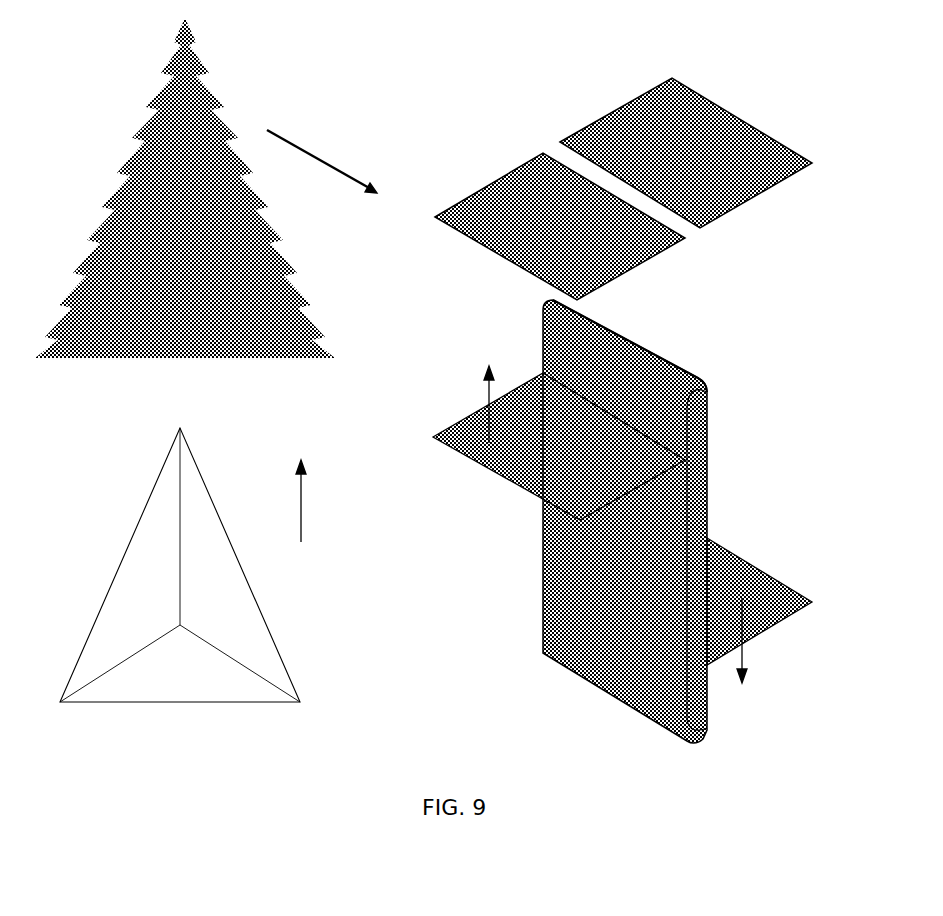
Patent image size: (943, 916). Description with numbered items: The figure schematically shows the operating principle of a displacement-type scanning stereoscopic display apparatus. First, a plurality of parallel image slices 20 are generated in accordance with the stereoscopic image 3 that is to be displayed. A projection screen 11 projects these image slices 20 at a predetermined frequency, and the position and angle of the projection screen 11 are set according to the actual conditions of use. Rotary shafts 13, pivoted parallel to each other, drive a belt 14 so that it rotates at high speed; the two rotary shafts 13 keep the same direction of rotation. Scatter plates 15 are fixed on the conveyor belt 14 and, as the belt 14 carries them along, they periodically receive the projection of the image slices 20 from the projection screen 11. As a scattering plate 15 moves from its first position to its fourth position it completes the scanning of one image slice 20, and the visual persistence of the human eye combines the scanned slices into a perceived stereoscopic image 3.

The stereoscopic image 3 is at (232, 597).
The projection screen 11 is at (643, 112).
The rotary shaft 13 is at (712, 385).
The belt 14 is at (542, 652).
The scatter plate 15 is at (740, 557).
The image slice 20 is at (233, 173).